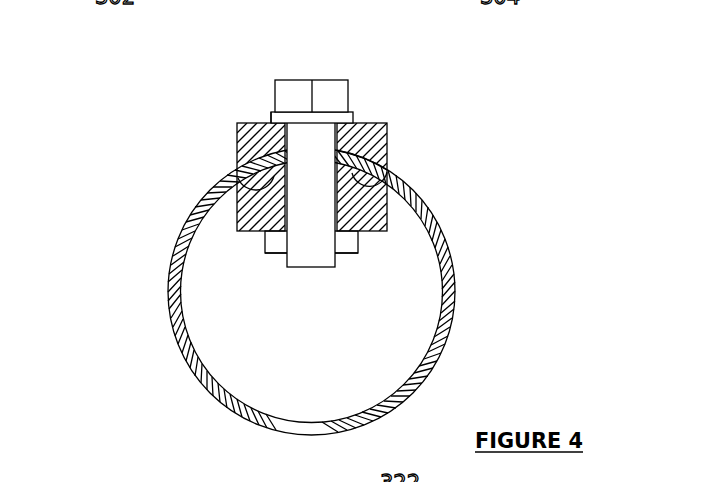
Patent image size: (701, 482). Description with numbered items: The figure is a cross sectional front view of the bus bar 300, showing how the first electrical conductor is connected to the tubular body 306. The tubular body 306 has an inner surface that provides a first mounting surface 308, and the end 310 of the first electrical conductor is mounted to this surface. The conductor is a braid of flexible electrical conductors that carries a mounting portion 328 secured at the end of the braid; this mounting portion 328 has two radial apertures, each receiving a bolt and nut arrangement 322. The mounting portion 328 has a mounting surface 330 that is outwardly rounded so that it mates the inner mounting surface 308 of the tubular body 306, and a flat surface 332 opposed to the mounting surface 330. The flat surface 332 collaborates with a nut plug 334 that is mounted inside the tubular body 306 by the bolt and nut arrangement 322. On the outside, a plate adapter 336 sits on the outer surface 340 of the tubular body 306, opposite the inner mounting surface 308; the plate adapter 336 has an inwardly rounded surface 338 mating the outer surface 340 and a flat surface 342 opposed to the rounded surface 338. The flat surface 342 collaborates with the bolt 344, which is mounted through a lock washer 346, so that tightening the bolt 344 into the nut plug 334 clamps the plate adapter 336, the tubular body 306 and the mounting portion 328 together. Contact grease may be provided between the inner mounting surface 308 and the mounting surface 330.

The bus bar 300 is at (97, 240).
The tubular body 306 is at (166, 258).
The first mounting surface 308 is at (239, 167).
The end of first electrical conductor 310 is at (391, 210).
The bolt and nut arrangement 322 is at (288, 58).
The mounting portion 328 is at (243, 243).
The mounting surface of mounting portion 330 is at (242, 167).
The flat surface 332 is at (258, 236).
The nut plug 334 is at (369, 247).
The plate adapter 336 is at (392, 148).
The inwardly rounded surface 338 is at (392, 176).
The outer surface 340 is at (358, 122).
The flat surface of plate adapter 342 is at (248, 120).
The bolt 344 is at (312, 80).
The lock washer 346 is at (264, 113).